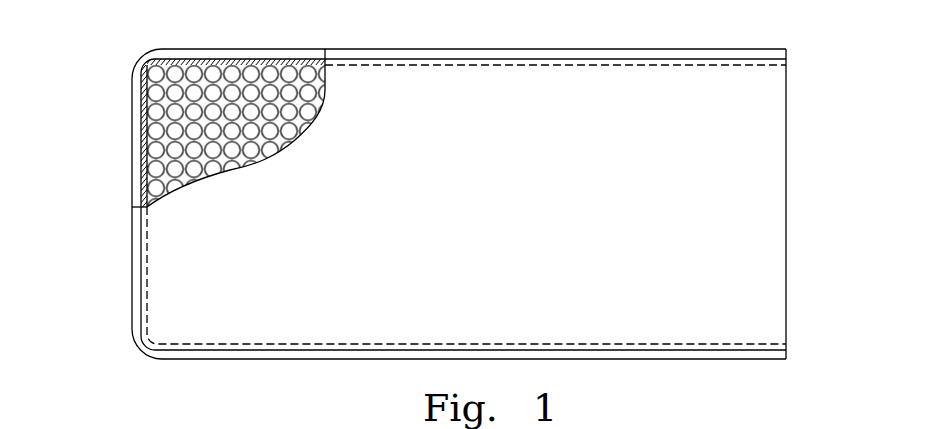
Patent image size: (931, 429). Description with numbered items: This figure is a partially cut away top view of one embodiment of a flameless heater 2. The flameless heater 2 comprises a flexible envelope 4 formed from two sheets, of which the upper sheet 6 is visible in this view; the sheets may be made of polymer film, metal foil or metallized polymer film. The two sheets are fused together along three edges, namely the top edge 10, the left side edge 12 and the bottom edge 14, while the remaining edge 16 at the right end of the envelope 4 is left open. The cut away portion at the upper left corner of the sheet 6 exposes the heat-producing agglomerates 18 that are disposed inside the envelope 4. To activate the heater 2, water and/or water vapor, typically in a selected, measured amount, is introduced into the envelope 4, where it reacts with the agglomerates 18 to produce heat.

The flameless heater 2 is at (108, 172).
The flexible envelope 4 is at (486, 134).
The sheet 6 is at (621, 116).
The fused edge 10 is at (403, 57).
The fused edge 12 is at (137, 282).
The fused edge 14 is at (337, 355).
The open edge 16 is at (786, 153).
The heat-producing agglomerates 18 is at (250, 92).